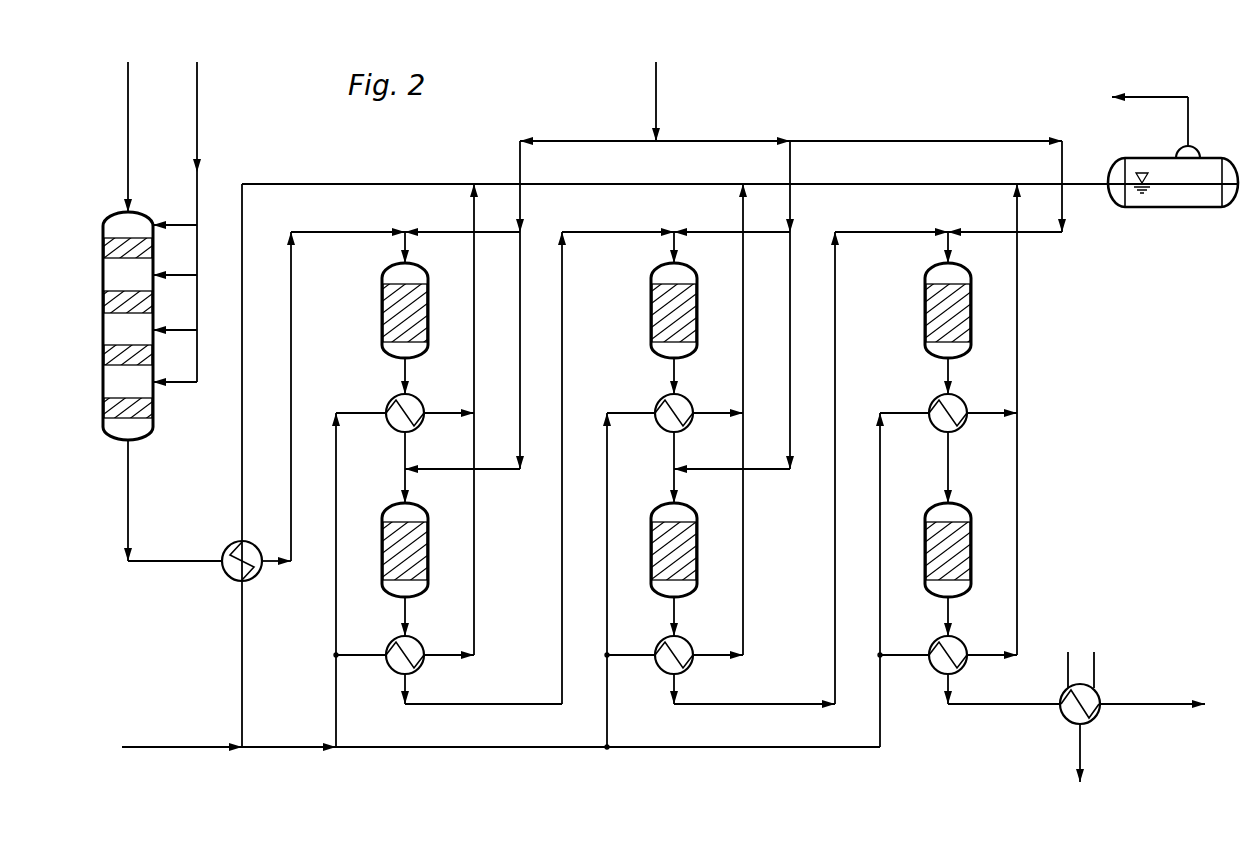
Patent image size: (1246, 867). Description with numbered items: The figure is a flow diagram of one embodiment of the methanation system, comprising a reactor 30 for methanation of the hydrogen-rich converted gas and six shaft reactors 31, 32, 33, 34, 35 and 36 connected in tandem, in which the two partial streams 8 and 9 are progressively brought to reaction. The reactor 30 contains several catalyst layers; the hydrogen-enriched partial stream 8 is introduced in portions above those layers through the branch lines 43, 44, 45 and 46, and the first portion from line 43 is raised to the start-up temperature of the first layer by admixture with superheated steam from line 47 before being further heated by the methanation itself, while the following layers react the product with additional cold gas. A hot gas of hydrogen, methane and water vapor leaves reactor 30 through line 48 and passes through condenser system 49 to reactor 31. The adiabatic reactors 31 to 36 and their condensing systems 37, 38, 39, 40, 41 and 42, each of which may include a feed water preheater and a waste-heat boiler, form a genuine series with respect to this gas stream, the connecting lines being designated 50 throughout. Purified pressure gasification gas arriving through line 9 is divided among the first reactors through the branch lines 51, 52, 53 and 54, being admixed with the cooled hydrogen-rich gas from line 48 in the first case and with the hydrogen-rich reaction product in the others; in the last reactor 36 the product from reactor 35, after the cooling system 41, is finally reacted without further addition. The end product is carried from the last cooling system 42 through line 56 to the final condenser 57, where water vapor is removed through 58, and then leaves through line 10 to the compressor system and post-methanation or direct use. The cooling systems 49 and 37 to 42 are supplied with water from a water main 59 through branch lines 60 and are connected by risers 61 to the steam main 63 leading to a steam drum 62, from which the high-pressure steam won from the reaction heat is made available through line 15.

The partial stream 8 is at (208, 222).
The line 9 is at (791, 147).
The line 10 is at (1097, 753).
The line 15 is at (1155, 107).
The reactor 30 is at (145, 326).
The shaft reactor 31 is at (390, 310).
The shaft reactor 32 is at (390, 550).
The shaft reactor 33 is at (658, 310).
The shaft reactor 34 is at (659, 550).
The shaft reactor 35 is at (933, 310).
The shaft reactor 36 is at (933, 550).
The condensing system 37 is at (430, 422).
The condensing system 38 is at (430, 664).
The condensing system 39 is at (699, 422).
The condensing system 40 is at (699, 664).
The cooling system 41 is at (973, 420).
The cooling system 42 is at (973, 664).
The branch line 43 is at (175, 212).
The branch line 44 is at (175, 262).
The branch line 45 is at (175, 317).
The branch line 46 is at (175, 369).
The line 47 is at (147, 137).
The line 48 is at (175, 500).
The condenser system 49 is at (256, 569).
The connecting line 50 is at (665, 530).
The branch line 51 is at (405, 381).
The branch line 52 is at (462, 350).
The branch line 53 is at (812, 453).
The branch line 54 is at (732, 350).
The line 56 is at (1004, 688).
The final condenser 57 is at (1094, 695).
The water vapor outlet 58 is at (1152, 688).
The water main 59 is at (500, 734).
The branch line 60 is at (618, 580).
The riser 61 is at (647, 465).
The steam drum 62 is at (1173, 168).
The steam main 63 is at (740, 168).